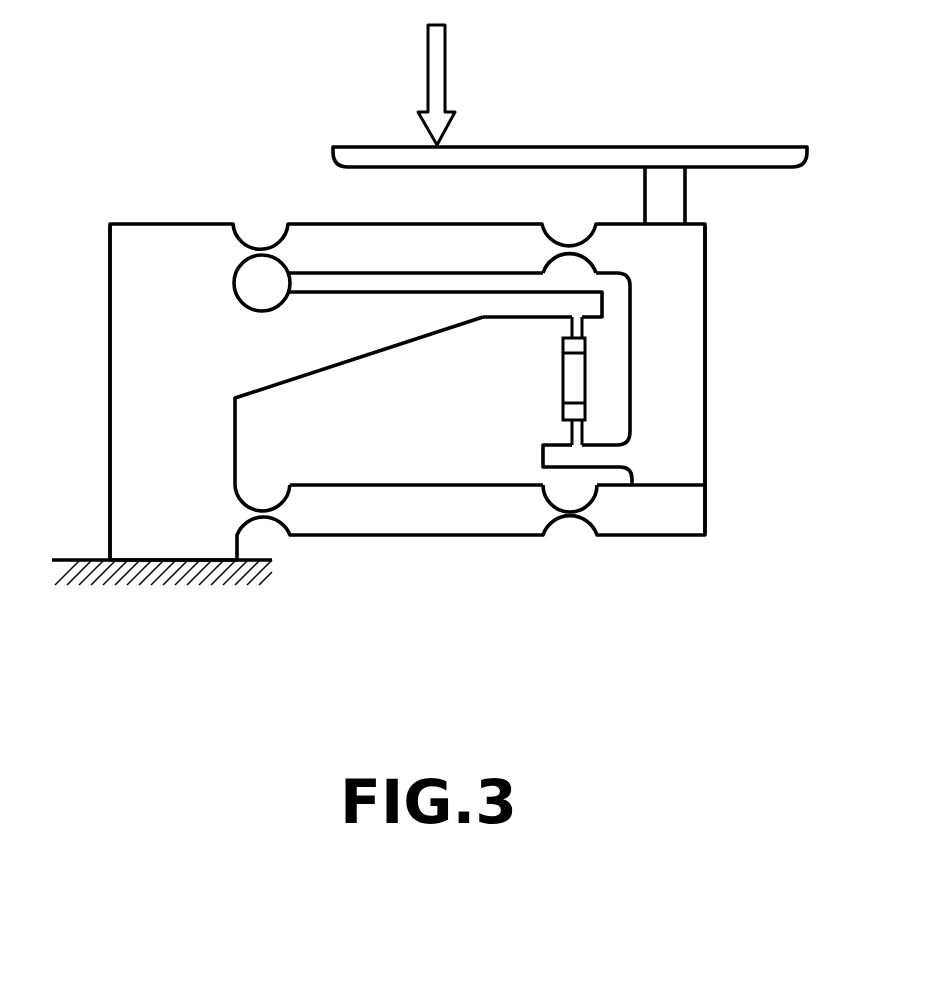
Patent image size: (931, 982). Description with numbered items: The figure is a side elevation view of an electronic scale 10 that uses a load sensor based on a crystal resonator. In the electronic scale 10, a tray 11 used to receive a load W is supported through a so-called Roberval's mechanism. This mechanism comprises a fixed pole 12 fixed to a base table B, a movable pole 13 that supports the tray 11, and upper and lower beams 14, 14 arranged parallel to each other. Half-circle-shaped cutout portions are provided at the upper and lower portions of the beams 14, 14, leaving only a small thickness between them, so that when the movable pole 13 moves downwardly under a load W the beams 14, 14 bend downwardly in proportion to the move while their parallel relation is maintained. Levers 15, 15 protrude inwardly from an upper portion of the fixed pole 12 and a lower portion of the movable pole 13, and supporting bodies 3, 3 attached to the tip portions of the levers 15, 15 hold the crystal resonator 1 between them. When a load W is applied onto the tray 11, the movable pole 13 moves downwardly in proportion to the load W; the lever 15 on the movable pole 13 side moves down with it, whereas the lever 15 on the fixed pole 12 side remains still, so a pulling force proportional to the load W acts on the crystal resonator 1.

The electronic scale 10 is at (327, 102).
The tray 11 is at (746, 147).
The fixed pole 12 is at (123, 368).
The movable pole 13 is at (698, 387).
The beams 14 is at (436, 224).
The levers 15 is at (518, 292).
The crystal resonator 1 is at (563, 380).
The supporting bodies 3 is at (563, 343).
The load W is at (456, 85).
The base table B is at (78, 558).